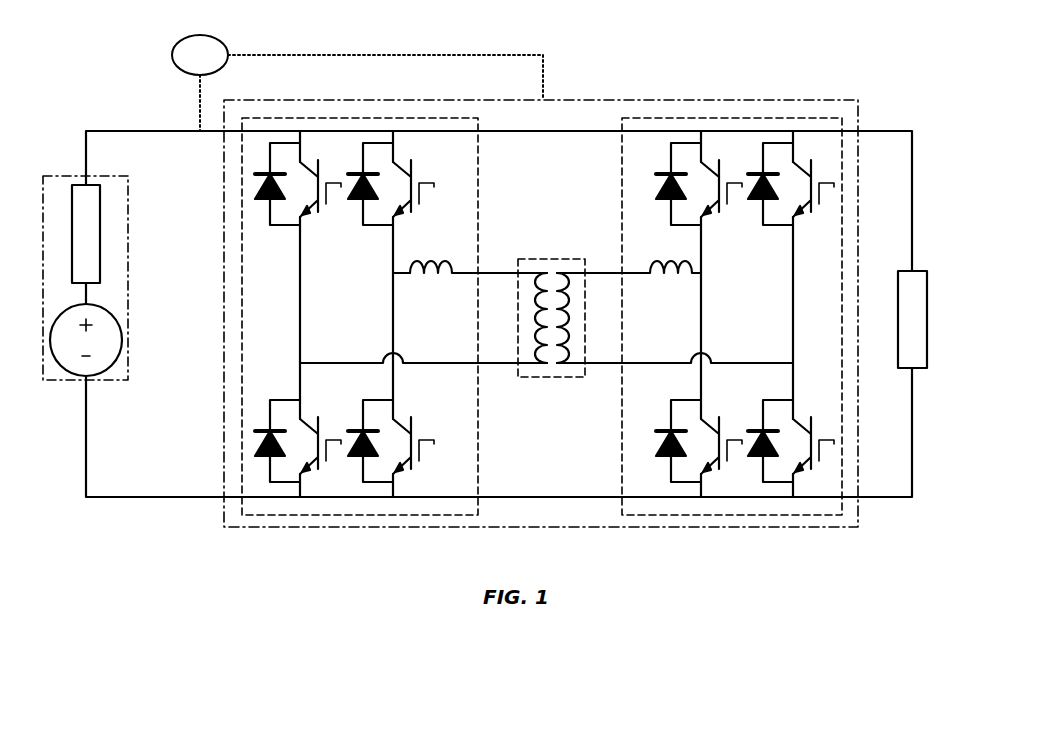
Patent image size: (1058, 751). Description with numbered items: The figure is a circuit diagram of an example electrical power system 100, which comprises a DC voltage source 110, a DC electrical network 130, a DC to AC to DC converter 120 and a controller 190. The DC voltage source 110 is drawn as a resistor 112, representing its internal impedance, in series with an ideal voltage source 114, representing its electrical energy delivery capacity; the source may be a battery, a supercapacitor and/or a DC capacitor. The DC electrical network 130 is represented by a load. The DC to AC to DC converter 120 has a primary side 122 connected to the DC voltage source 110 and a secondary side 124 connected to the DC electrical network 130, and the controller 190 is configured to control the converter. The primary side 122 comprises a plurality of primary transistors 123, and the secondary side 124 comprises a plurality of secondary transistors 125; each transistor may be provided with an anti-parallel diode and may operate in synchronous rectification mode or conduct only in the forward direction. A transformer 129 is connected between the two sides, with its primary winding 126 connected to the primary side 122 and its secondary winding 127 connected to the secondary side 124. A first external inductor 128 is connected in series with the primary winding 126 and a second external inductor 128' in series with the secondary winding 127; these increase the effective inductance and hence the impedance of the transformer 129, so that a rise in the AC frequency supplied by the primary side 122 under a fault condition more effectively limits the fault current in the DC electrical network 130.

The electrical power system 100 is at (85, 41).
The DC voltage source 110 is at (97, 386).
The resistor 112 is at (100, 258).
The ideal voltage source 114 is at (118, 330).
The DC to AC to DC converter 120 is at (808, 100).
The primary side 122 is at (480, 163).
The primary transistors 123 is at (365, 231).
The secondary side 124 is at (622, 452).
The secondary transistors 125 is at (772, 233).
The primary winding 126 is at (534, 363).
The secondary winding 127 is at (567, 273).
The first external inductor 128 is at (478, 300).
The second external inductor 128' is at (629, 300).
The transformer 129 is at (553, 258).
The DC electrical network 130 is at (927, 340).
The controller 190 is at (173, 47).